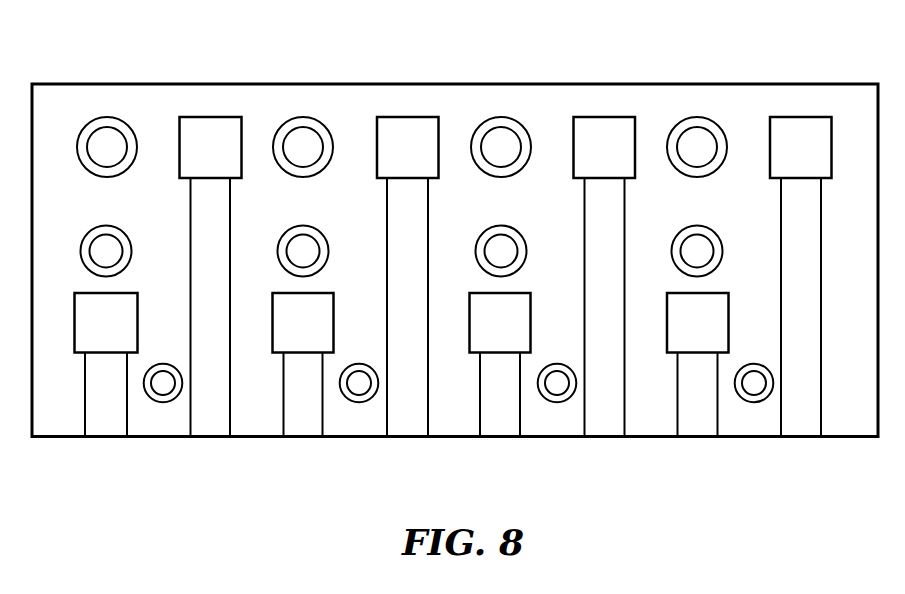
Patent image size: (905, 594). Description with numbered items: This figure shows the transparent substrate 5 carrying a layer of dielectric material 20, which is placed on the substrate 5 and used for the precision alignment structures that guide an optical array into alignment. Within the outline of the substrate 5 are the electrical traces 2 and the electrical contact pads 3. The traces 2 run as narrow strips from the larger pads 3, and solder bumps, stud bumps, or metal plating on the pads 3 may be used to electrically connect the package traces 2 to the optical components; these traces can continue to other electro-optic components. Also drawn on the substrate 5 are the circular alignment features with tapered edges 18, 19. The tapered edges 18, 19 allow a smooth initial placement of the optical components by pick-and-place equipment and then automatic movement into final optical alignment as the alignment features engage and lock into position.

The electrical traces 2 is at (515, 413).
The electrical pads 3 is at (610, 120).
The transparent substrate 5 is at (455, 231).
The tapered edge 18 is at (90, 243).
The tapered edge 19 is at (105, 130).
The dielectric material 20 is at (402, 90).